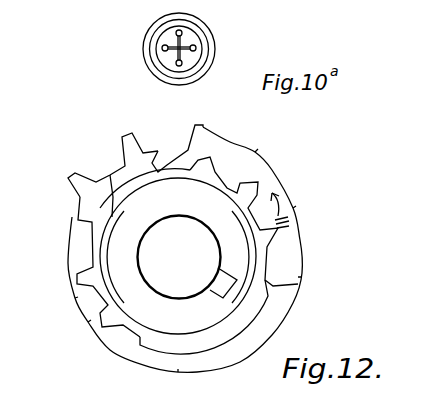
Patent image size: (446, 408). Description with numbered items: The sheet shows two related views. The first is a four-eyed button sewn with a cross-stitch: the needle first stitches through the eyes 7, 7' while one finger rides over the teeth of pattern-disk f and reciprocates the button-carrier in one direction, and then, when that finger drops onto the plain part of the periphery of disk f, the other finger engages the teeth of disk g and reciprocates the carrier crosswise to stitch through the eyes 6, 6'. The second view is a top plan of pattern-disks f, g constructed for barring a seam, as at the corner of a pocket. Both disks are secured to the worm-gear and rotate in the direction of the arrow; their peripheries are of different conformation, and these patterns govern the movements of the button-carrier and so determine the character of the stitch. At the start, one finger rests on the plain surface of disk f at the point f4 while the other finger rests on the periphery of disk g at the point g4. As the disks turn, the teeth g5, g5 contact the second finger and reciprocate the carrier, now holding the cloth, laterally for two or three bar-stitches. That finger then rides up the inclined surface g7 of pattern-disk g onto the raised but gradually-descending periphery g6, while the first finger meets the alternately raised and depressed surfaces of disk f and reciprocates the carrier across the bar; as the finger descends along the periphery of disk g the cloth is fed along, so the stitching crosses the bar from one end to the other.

In FIG. 10A, the eye 6 is at (213, 55).
In FIG. 10A, the eye 6' is at (139, 39).
In FIG. 10A, the eye 7 is at (179, 77).
In FIG. 10A, the eye 7' is at (202, 40).
In FIG. 12, the pattern-disk g is at (199, 255).
In FIG. 12, the point g4 is at (68, 215).
In FIG. 12, the teeth g5 is at (77, 176).
In FIG. 12, the raised but gradually-descending periphery g6 is at (250, 144).
In FIG. 12, the inclined surface g7 is at (193, 130).
In FIG. 12, the pattern-disk f is at (179, 272).
In FIG. 12, the point f4 is at (272, 283).